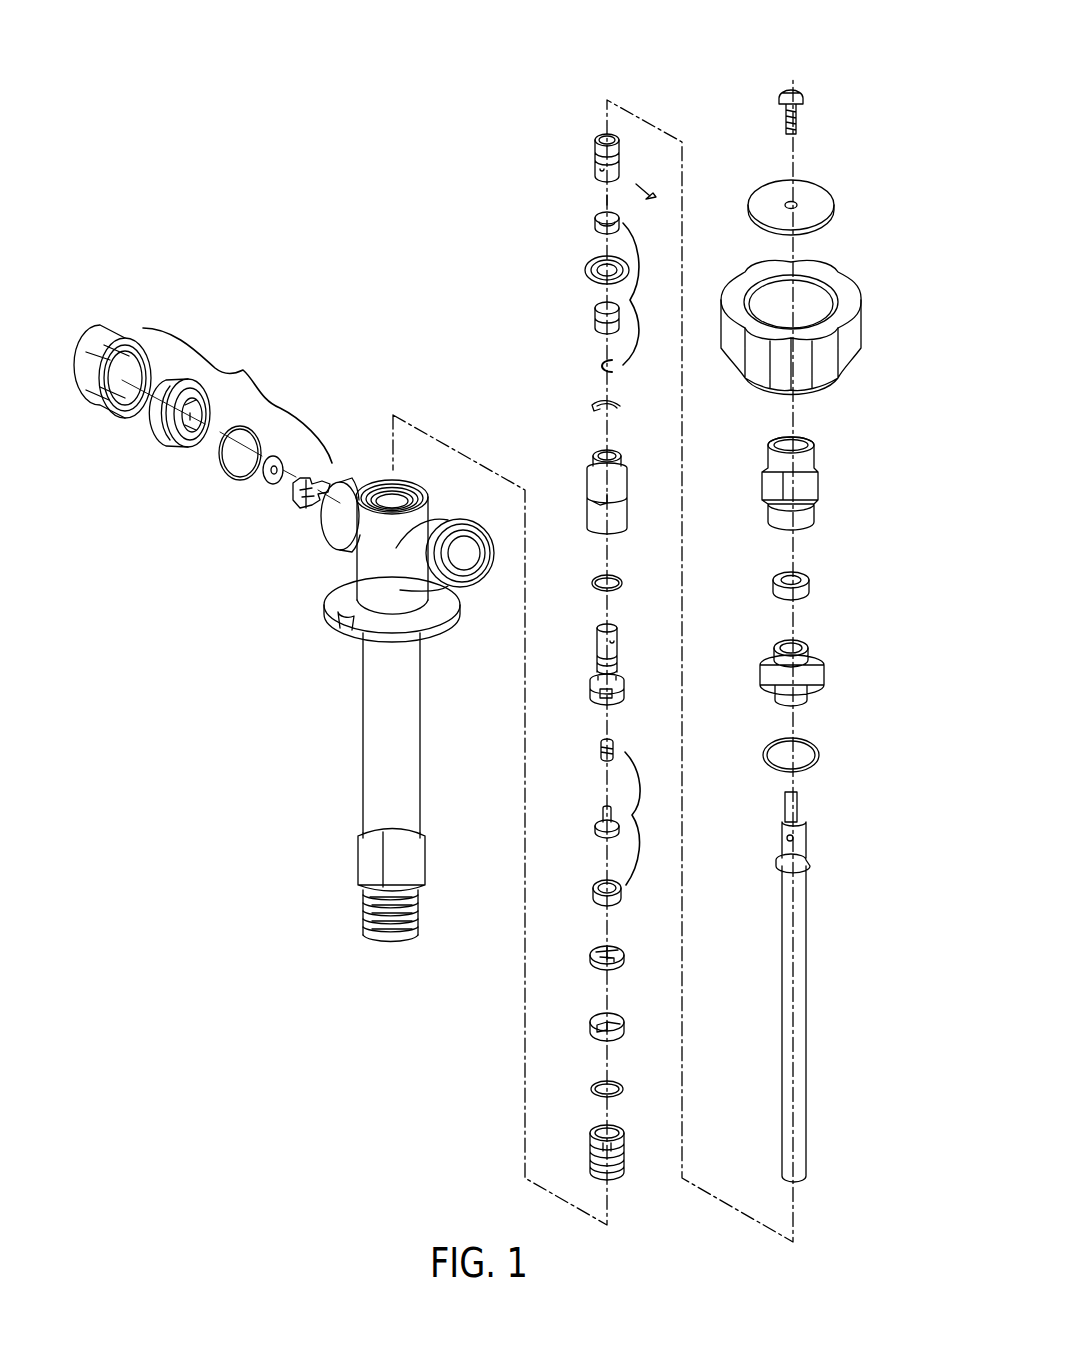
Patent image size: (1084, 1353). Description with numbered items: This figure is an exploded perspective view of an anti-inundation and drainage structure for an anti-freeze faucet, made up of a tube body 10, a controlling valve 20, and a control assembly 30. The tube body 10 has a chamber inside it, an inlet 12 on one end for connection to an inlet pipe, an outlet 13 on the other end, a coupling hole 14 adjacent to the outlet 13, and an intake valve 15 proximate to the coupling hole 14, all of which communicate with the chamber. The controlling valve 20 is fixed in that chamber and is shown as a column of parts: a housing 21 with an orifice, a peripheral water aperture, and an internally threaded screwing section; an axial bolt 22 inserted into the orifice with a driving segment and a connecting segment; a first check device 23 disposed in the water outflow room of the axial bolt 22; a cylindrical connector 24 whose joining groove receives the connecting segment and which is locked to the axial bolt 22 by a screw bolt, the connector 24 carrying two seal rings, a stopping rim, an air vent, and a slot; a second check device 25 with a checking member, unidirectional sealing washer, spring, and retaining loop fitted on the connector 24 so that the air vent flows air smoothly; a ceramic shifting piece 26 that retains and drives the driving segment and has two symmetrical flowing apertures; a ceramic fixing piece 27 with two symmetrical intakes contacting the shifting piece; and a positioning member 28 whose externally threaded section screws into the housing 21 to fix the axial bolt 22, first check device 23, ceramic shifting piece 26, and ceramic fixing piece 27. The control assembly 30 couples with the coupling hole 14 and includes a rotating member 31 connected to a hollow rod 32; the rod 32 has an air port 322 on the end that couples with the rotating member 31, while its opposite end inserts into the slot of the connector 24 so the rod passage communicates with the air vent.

The tube body 10 is at (428, 727).
The inlet 12 is at (390, 942).
The outlet 13 is at (470, 545).
The coupling hole 14 is at (380, 500).
The intake valve 15 is at (207, 416).
The controlling valve 20 is at (553, 157).
The housing 21 is at (619, 487).
The axial bolt 22 is at (619, 678).
The first check device 23 is at (634, 822).
The connector 24 is at (621, 158).
The second check device 25 is at (628, 292).
The ceramic shifting piece 26 is at (616, 951).
The ceramic fixing piece 27 is at (620, 1022).
The positioning member 28 is at (622, 1148).
The control assembly 30 is at (848, 270).
The rotating member 31 is at (838, 355).
The rod 32 is at (790, 1016).
The air port 322 is at (795, 838).